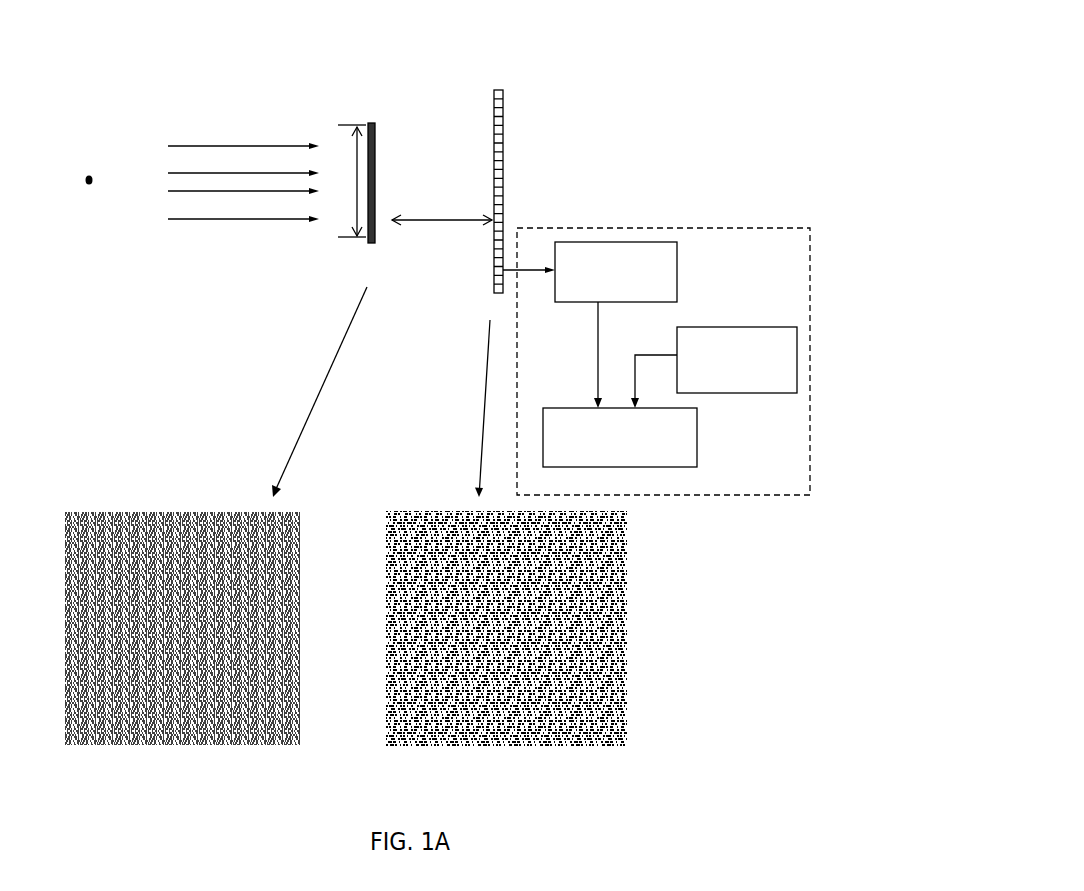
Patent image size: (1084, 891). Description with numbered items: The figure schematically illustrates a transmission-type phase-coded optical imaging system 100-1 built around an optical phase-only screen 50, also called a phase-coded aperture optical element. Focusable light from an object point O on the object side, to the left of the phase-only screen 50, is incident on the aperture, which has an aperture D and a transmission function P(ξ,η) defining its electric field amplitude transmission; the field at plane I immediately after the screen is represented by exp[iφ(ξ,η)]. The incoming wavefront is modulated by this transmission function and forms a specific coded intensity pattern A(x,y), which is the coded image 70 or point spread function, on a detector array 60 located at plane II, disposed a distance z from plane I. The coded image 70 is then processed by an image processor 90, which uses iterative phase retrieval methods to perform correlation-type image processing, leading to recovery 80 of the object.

The transmission-type phase-coded optical imaging system 100-1 is at (672, 57).
The optical phase-only screen 50 is at (364, 283).
The detector array 60 is at (508, 88).
The coded image 70 is at (640, 242).
The recovery 80 is at (697, 453).
The image processor 90 is at (810, 227).